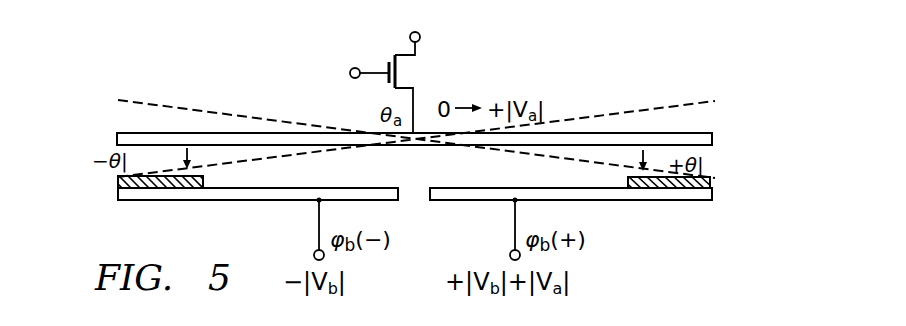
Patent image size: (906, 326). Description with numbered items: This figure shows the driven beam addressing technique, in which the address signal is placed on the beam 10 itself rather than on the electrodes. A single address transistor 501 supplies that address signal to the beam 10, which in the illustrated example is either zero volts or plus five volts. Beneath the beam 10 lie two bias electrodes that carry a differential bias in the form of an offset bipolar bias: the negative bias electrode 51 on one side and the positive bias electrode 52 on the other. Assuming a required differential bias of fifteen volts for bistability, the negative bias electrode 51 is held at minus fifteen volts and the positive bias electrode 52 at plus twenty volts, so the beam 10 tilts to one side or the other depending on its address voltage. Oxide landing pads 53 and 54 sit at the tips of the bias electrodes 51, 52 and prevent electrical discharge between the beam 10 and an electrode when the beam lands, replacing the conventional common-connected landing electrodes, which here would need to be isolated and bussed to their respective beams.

The beam 10 is at (252, 133).
The address transistor 501 is at (403, 73).
The negative bias electrode 51 is at (193, 200).
The positive bias electrode 52 is at (633, 202).
The oxide landing pad 53 is at (118, 178).
The oxide landing pad 54 is at (710, 185).